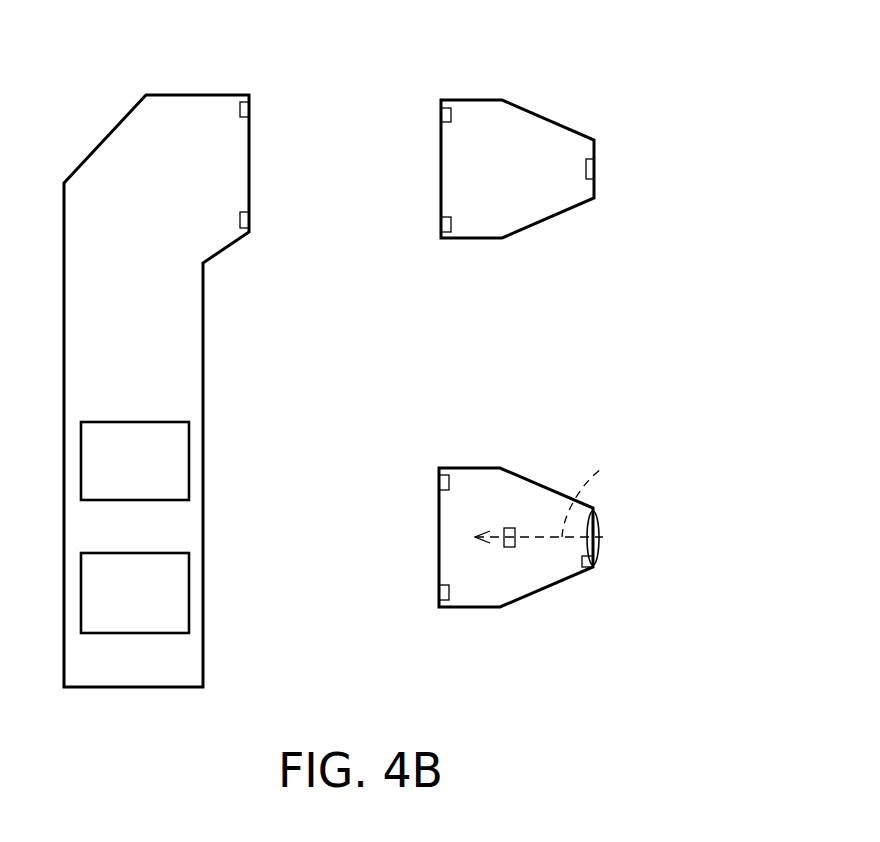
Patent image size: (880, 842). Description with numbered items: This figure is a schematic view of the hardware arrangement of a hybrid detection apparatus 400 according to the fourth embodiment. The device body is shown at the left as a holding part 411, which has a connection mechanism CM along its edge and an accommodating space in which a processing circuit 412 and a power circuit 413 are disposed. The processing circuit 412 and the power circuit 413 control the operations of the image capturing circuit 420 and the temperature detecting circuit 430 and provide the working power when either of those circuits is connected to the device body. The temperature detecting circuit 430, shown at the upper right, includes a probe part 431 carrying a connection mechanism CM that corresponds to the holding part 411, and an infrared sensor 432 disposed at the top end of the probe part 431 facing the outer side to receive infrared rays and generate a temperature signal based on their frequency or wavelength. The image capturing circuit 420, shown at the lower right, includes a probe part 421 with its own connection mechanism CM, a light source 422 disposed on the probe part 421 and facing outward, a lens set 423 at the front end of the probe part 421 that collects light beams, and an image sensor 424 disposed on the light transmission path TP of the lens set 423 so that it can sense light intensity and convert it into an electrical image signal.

The hybrid detection apparatus 400 is at (751, 762).
The holding part 411 is at (183, 118).
The processing circuit 412 is at (189, 462).
The power circuit 413 is at (189, 592).
The image capturing circuit 420 is at (561, 521).
The probe part 421 is at (508, 500).
The light source 422 is at (585, 568).
The lens set 423 is at (597, 527).
The image sensor 424 is at (513, 548).
The temperature detecting circuit 430 is at (562, 127).
The probe part 431 is at (512, 132).
The infrared sensor 432 is at (590, 170).
The connection mechanism CM is at (244, 100).
The light transmission path TP is at (579, 444).